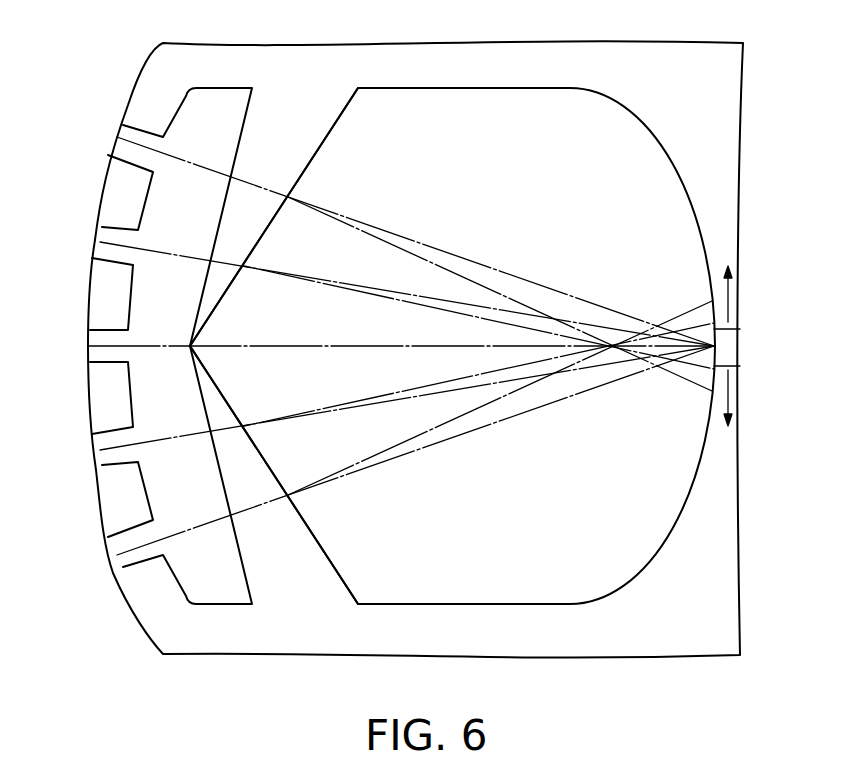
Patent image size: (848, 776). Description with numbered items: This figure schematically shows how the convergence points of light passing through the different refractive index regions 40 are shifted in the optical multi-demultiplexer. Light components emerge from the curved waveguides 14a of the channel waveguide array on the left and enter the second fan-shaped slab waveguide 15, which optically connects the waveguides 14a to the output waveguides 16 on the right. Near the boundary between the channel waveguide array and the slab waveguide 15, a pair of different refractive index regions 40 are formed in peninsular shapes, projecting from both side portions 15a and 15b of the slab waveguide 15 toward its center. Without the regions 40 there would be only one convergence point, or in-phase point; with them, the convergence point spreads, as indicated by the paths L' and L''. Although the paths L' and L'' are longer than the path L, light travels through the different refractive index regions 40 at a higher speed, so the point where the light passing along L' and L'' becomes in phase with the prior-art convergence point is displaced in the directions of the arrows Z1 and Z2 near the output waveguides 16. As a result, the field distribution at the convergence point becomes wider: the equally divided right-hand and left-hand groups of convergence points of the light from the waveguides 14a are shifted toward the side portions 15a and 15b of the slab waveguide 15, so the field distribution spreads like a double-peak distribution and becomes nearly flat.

The curved waveguides 14a is at (124, 132).
The second fan-shaped slab waveguide 15 is at (610, 528).
The side portion of the second slab waveguide 15a is at (481, 88).
The side portion of the second slab waveguide 15b is at (481, 604).
The different refractive index region 40 is at (296, 160).
The output waveguides 16 is at (716, 346).
The arrow direction Z1 is at (740, 302).
The arrow direction Z2 is at (740, 393).
The light path L is at (401, 346).
The light path L' is at (479, 346).
The light path L'' is at (500, 346).